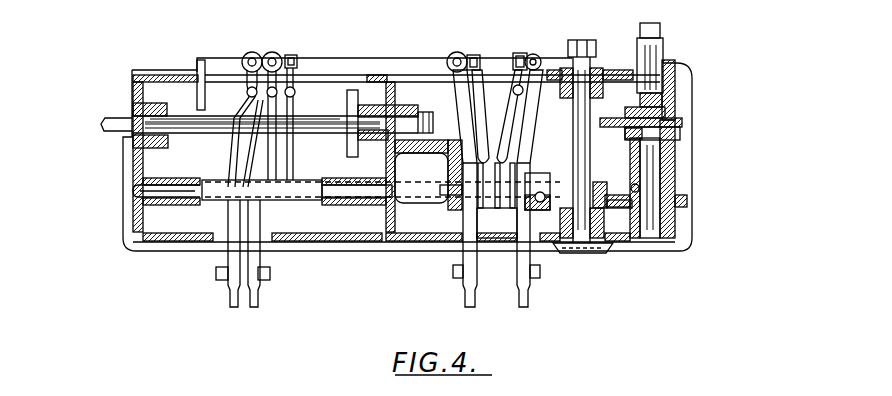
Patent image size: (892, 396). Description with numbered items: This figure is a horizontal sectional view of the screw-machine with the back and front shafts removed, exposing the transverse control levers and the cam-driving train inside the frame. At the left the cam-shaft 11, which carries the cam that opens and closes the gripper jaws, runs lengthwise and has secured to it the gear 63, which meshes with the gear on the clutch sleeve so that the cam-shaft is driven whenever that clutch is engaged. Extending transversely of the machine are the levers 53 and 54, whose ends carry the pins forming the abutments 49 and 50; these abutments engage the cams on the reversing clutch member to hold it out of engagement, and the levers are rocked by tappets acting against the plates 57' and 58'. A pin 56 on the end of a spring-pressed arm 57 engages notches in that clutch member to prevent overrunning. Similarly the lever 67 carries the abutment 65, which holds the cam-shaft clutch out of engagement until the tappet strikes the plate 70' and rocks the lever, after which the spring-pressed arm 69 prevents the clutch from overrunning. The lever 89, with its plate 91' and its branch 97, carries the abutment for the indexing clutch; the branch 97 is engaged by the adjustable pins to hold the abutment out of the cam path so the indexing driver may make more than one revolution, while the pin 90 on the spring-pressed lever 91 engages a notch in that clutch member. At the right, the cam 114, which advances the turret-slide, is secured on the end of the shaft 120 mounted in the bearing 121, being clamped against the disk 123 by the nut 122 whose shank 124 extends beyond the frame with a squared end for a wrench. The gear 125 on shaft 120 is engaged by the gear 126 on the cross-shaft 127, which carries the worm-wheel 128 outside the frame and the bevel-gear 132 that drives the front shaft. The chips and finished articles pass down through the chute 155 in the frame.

The cam-shaft 11 is at (107, 133).
The abutment 49 is at (254, 52).
The abutment 50 is at (276, 53).
The lever 53 is at (231, 155).
The lever 54 is at (258, 182).
The pin 56 is at (297, 60).
The spring-pressed arm 57 is at (302, 100).
The plate 57' is at (210, 253).
The plate 58' is at (278, 253).
The gear 63 is at (350, 102).
The abutment 65 is at (460, 52).
The lever 67 is at (463, 115).
The spring-pressed arm 69 is at (484, 102).
The plate 70' is at (444, 274).
The lever 89 is at (528, 128).
The pin 90 is at (522, 52).
The spring-pressed lever 91 is at (506, 116).
The plate 91' is at (549, 282).
The branch 97 is at (530, 88).
The cam 114 is at (684, 122).
The shaft 120 is at (657, 158).
The bearing 121 is at (676, 173).
The nut 122 is at (678, 103).
The disk 123 is at (682, 131).
The shank 124 is at (660, 48).
The gear 125 is at (688, 201).
The gear 126 is at (612, 193).
The cross-shaft 127 is at (583, 155).
The worm-wheel 128 is at (605, 60).
The bevel-gear 132 is at (592, 254).
The chute 155 is at (422, 192).